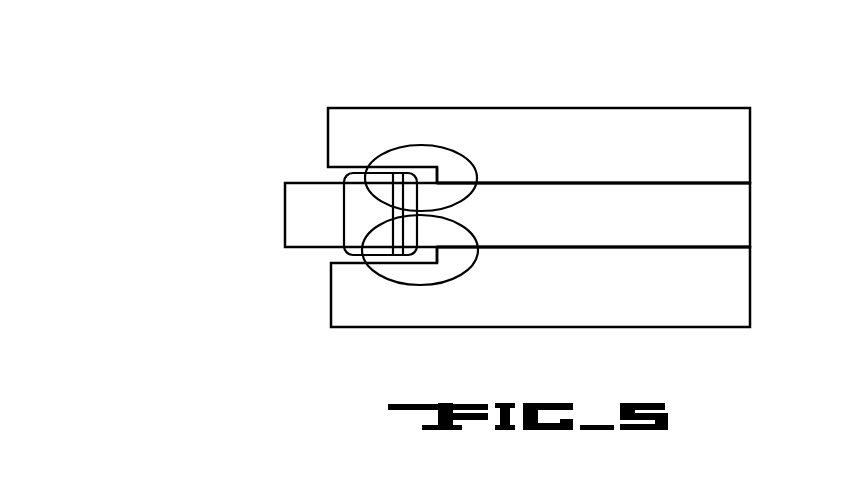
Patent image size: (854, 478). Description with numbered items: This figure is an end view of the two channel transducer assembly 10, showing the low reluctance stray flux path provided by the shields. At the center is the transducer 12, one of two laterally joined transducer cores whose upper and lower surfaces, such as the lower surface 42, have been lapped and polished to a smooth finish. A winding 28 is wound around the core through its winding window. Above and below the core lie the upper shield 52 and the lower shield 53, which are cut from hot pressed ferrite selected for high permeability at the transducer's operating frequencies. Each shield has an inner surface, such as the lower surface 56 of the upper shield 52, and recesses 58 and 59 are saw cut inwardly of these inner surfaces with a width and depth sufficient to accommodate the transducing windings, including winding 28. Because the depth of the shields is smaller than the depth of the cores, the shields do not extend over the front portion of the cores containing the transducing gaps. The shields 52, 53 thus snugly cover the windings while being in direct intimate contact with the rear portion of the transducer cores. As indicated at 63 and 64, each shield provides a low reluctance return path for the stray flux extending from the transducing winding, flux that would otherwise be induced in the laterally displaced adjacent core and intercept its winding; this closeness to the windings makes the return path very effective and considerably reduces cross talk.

The transducer assembly 10 is at (545, 80).
The transducer 12 is at (287, 222).
The winding 28 is at (398, 236).
The lower surface 42 is at (692, 246).
The upper shield 52 is at (704, 114).
The lower shield 53 is at (683, 313).
The lower surface of shield 56 is at (621, 183).
The recess 58 is at (428, 176).
The recess 59 is at (423, 265).
The low reluctance return path 63 is at (468, 159).
The low reluctance return path 64 is at (468, 275).